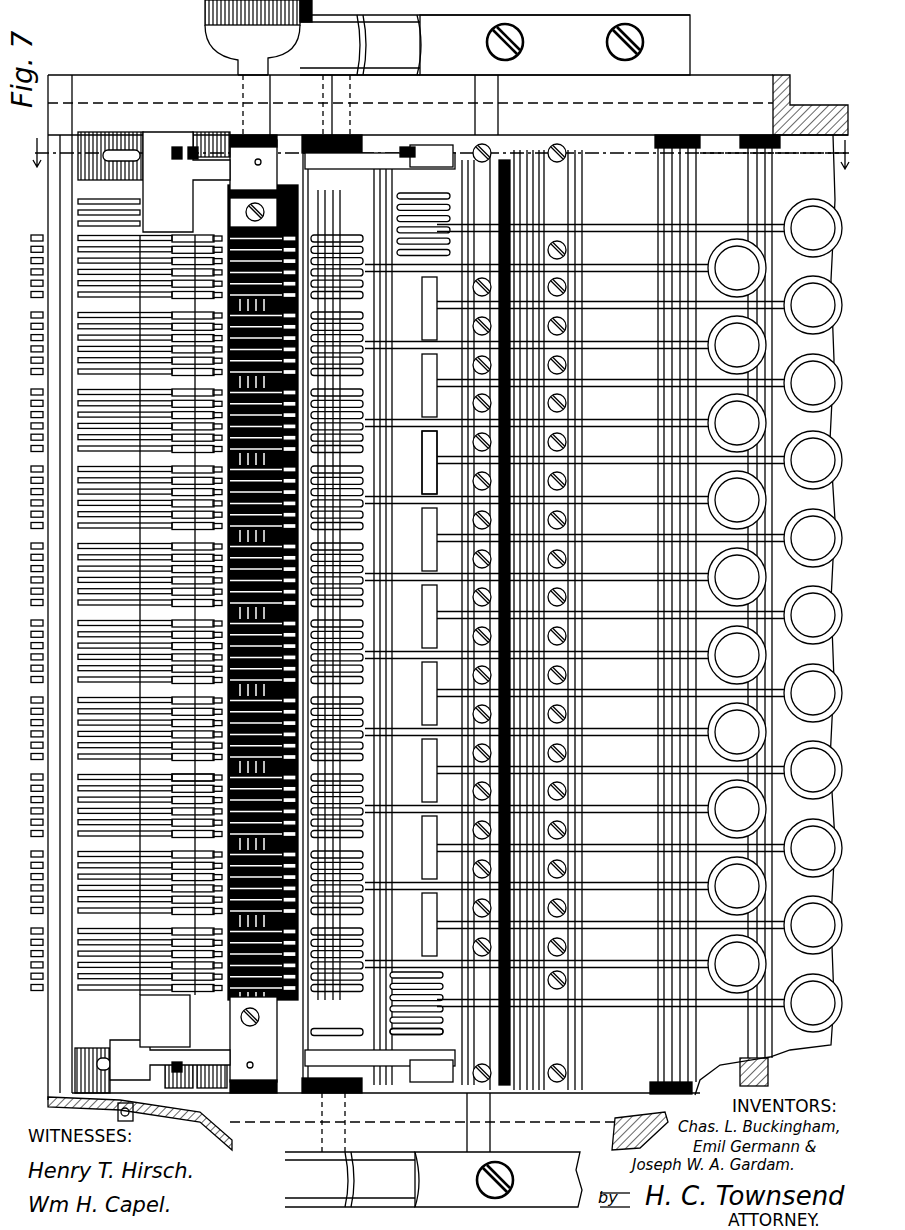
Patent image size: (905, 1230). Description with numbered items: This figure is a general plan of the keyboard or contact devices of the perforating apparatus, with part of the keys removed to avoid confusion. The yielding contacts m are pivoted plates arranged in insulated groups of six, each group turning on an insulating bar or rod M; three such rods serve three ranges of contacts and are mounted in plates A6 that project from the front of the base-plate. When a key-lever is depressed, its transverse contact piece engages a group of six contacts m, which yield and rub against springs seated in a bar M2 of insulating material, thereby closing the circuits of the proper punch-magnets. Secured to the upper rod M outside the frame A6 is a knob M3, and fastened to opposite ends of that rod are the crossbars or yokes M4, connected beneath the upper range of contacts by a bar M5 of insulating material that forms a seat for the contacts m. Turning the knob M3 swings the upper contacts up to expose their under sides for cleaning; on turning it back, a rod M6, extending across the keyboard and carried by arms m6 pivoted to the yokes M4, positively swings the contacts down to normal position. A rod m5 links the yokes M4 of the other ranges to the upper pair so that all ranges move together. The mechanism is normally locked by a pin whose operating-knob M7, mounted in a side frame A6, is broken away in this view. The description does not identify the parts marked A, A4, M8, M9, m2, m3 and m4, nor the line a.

The main frame A is at (172, 190).
The frame cross bar A4 is at (437, 500).
The plates (side frames) A6 is at (150, 58).
The section line a is at (442, 159).
The insulating bar or rod M is at (240, 140).
The bar of insulating material M2 is at (120, 140).
The knob M3 is at (240, 70).
The crossbars or yokes M4 is at (305, 140).
The bar of insulating material M5 is at (180, 145).
The rod M6 is at (395, 160).
The operating-knob M7 is at (415, 145).
The type block M8 is at (440, 150).
The guide bar M9 is at (490, 150).
The yielding contacts m is at (440, 215).
The key stem m2 is at (365, 440).
The finger key m3 is at (365, 512).
The lever head m4 is at (365, 778).
The rod m5 is at (320, 1085).
The arms m6 is at (430, 1085).